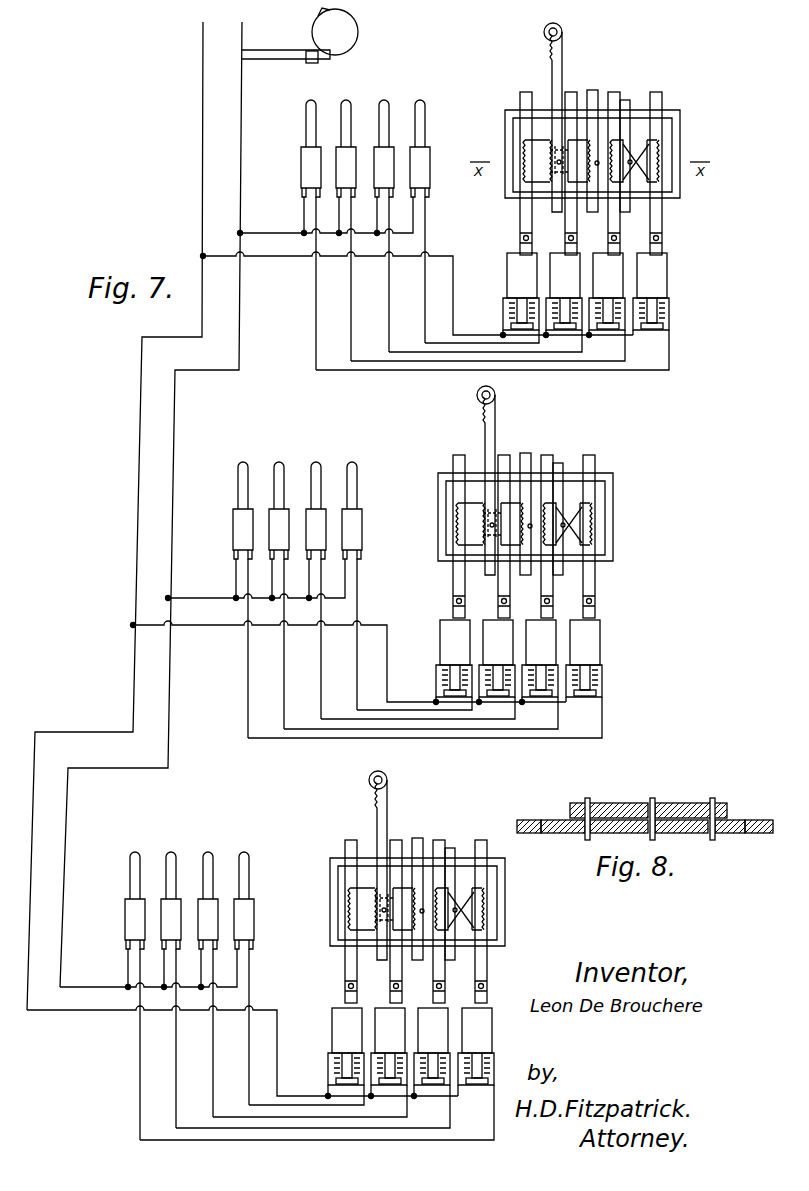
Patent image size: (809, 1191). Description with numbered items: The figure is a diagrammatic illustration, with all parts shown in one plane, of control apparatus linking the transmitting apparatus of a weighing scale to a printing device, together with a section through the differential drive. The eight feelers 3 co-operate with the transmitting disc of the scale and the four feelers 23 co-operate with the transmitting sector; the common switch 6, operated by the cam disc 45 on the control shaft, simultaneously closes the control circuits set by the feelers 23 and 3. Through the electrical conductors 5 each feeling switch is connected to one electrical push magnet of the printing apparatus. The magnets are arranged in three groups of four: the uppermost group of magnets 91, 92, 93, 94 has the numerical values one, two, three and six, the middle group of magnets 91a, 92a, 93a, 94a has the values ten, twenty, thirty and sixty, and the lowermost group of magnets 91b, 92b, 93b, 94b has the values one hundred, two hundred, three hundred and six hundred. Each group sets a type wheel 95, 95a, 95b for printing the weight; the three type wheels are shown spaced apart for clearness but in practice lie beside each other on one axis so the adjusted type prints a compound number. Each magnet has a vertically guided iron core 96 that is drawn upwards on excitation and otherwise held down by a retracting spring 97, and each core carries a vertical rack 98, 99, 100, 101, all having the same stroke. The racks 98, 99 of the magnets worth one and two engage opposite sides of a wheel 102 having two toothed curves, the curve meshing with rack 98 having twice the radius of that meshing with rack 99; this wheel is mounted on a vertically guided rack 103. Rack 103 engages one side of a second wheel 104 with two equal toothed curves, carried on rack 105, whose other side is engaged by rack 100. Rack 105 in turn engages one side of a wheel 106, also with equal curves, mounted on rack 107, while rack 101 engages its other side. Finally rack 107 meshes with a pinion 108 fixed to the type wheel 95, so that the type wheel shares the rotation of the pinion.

In FIG. 7, the feelers 3 is at (238, 520).
In FIG. 7, the electrical conductors 5 is at (388, 300).
In FIG. 7, the common switch 6 is at (300, 58).
In FIG. 7, the feelers 23 is at (305, 168).
In FIG. 7, the cam disc 45 is at (357, 37).
In FIG. 7, the push magnet 91 is at (660, 262).
In FIG. 7, the push magnet 92 is at (603, 267).
In FIG. 7, the push magnet 93 is at (573, 265).
In FIG. 7, the push magnet 94 is at (508, 262).
In FIG. 7, the push magnet 91a is at (598, 632).
In FIG. 7, the push magnet 92a is at (531, 628).
In FIG. 7, the push magnet 93a is at (488, 628).
In FIG. 7, the push magnet 94a is at (442, 630).
In FIG. 7, the push magnet 91b is at (480, 1015).
In FIG. 7, the push magnet 92b is at (420, 1012).
In FIG. 7, the push magnet 93b is at (378, 1012).
In FIG. 7, the push magnet 94b is at (334, 1015).
In FIG. 7, the type wheel 95 is at (548, 40).
In FIG. 7, the type wheel 95a is at (477, 398).
In FIG. 7, the type wheel 95b is at (369, 782).
In FIG. 7, the iron core 96 is at (675, 332).
In FIG. 7, the retracting spring 97 is at (509, 316).
In FIG. 7, the rack 98 is at (655, 226).
In FIG. 8, the rack 98 is at (768, 820).
In FIG. 7, the rack 99 is at (614, 232).
In FIG. 8, the rack 99 is at (675, 833).
In FIG. 7, the rack 100 is at (566, 236).
In FIG. 8, the rack 100 is at (605, 803).
In FIG. 7, the rack 101 is at (520, 213).
In FIG. 8, the rack 101 is at (526, 820).
In FIG. 7, the wheel 102 is at (645, 152).
In FIG. 8, the wheel 102 is at (745, 833).
In FIG. 7, the rack 103 is at (630, 140).
In FIG. 8, the rack 103 is at (714, 803).
In FIG. 7, the second wheel 104 is at (625, 140).
In FIG. 8, the second wheel 104 is at (655, 803).
In FIG. 7, the rack 105 is at (593, 100).
In FIG. 8, the rack 105 is at (625, 833).
In FIG. 7, the wheel 106 is at (528, 145).
In FIG. 8, the wheel 106 is at (560, 833).
In FIG. 7, the rack 107 is at (563, 45).
In FIG. 8, the rack 107 is at (585, 803).
In FIG. 7, the pinion 108 is at (545, 30).